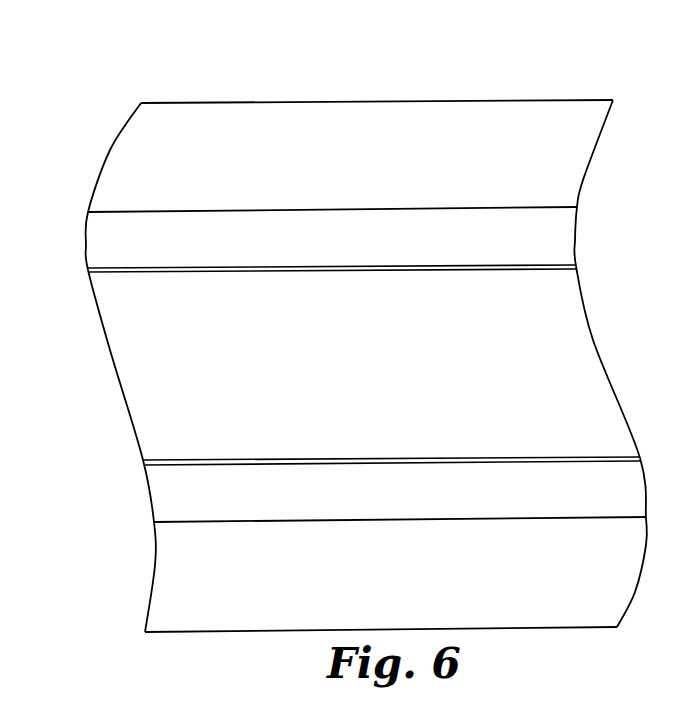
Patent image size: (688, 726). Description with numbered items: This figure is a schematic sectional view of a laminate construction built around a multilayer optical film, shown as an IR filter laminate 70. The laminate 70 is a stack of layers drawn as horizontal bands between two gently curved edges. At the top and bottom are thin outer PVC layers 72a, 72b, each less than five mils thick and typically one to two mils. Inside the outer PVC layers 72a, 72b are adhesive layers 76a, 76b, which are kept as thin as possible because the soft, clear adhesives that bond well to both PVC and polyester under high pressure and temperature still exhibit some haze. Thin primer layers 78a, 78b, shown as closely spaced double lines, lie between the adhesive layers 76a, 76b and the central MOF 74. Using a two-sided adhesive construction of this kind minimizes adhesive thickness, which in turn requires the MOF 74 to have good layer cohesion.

The IR filter laminate 70 is at (326, 331).
The outer PVC layer 72a is at (122, 160).
The outer PVC layer 72b is at (160, 572).
The MOF 74 is at (128, 363).
The adhesive layer 76a is at (98, 242).
The adhesive layer 76b is at (155, 483).
The primer layer 78a is at (93, 272).
The primer layer 78b is at (157, 461).